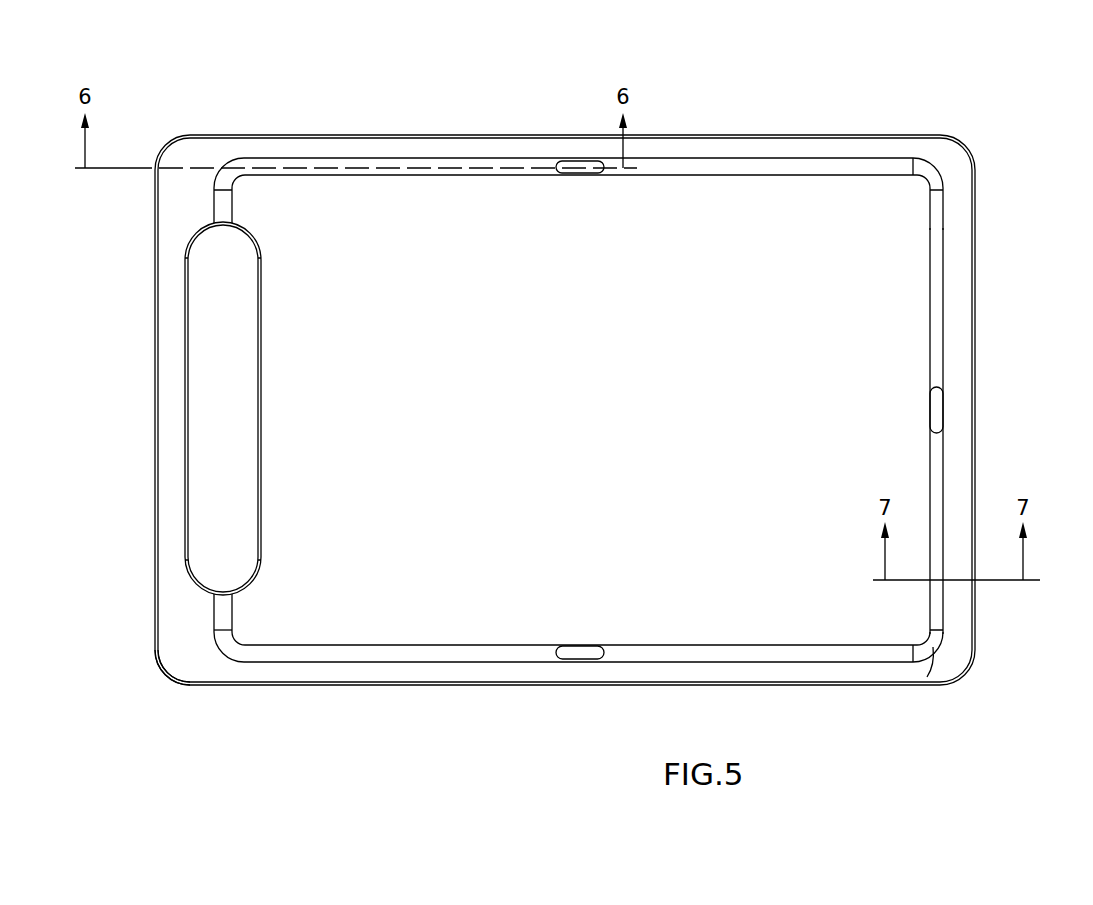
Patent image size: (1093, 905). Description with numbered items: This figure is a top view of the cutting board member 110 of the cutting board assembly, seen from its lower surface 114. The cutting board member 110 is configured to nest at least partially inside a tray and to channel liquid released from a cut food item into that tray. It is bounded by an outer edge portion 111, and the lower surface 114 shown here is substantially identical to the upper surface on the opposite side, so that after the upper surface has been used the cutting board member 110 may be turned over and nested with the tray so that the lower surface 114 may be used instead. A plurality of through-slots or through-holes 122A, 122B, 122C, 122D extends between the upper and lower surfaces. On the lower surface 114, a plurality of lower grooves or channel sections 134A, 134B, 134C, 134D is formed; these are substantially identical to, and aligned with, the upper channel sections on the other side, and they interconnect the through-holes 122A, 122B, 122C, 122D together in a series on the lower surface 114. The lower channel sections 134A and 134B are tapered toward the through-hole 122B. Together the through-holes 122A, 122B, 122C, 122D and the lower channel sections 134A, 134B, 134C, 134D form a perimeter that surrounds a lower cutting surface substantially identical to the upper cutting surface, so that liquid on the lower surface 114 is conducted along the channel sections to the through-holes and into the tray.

The cutting board member 110 is at (731, 60).
The outer edge portion 111 is at (322, 134).
The lower surface 114 is at (187, 657).
The through-hole 122A is at (186, 410).
The through-hole 122B is at (575, 162).
The through-hole 122C is at (937, 405).
The through-hole 122D is at (590, 655).
The lower channel section 134A is at (425, 166).
The lower channel section 134B is at (937, 296).
The lower channel section 134C is at (793, 657).
The lower channel section 134D is at (383, 656).